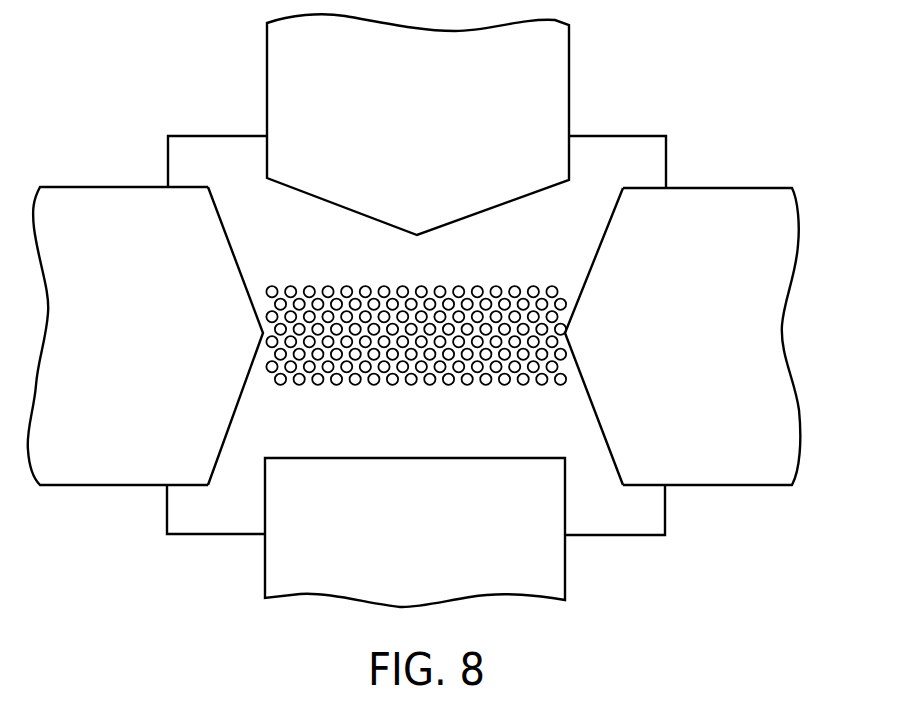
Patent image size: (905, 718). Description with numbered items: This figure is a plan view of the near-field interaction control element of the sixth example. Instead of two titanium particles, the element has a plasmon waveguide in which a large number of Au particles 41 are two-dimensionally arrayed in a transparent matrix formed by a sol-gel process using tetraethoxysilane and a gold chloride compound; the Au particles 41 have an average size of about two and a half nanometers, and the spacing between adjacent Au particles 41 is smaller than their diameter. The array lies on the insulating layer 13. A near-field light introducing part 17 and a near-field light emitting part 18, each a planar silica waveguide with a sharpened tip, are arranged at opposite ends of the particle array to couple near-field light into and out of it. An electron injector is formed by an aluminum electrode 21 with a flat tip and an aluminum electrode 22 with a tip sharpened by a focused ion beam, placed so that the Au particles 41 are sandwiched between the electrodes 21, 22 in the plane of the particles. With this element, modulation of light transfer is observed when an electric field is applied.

The insulating layer 13 is at (620, 137).
The near-field light introducing part 17 is at (97, 197).
The near-field light emitting part 18 is at (753, 197).
The aluminum electrode 21 is at (557, 571).
The aluminum electrode 22 is at (569, 48).
The Au particles 41 is at (278, 385).